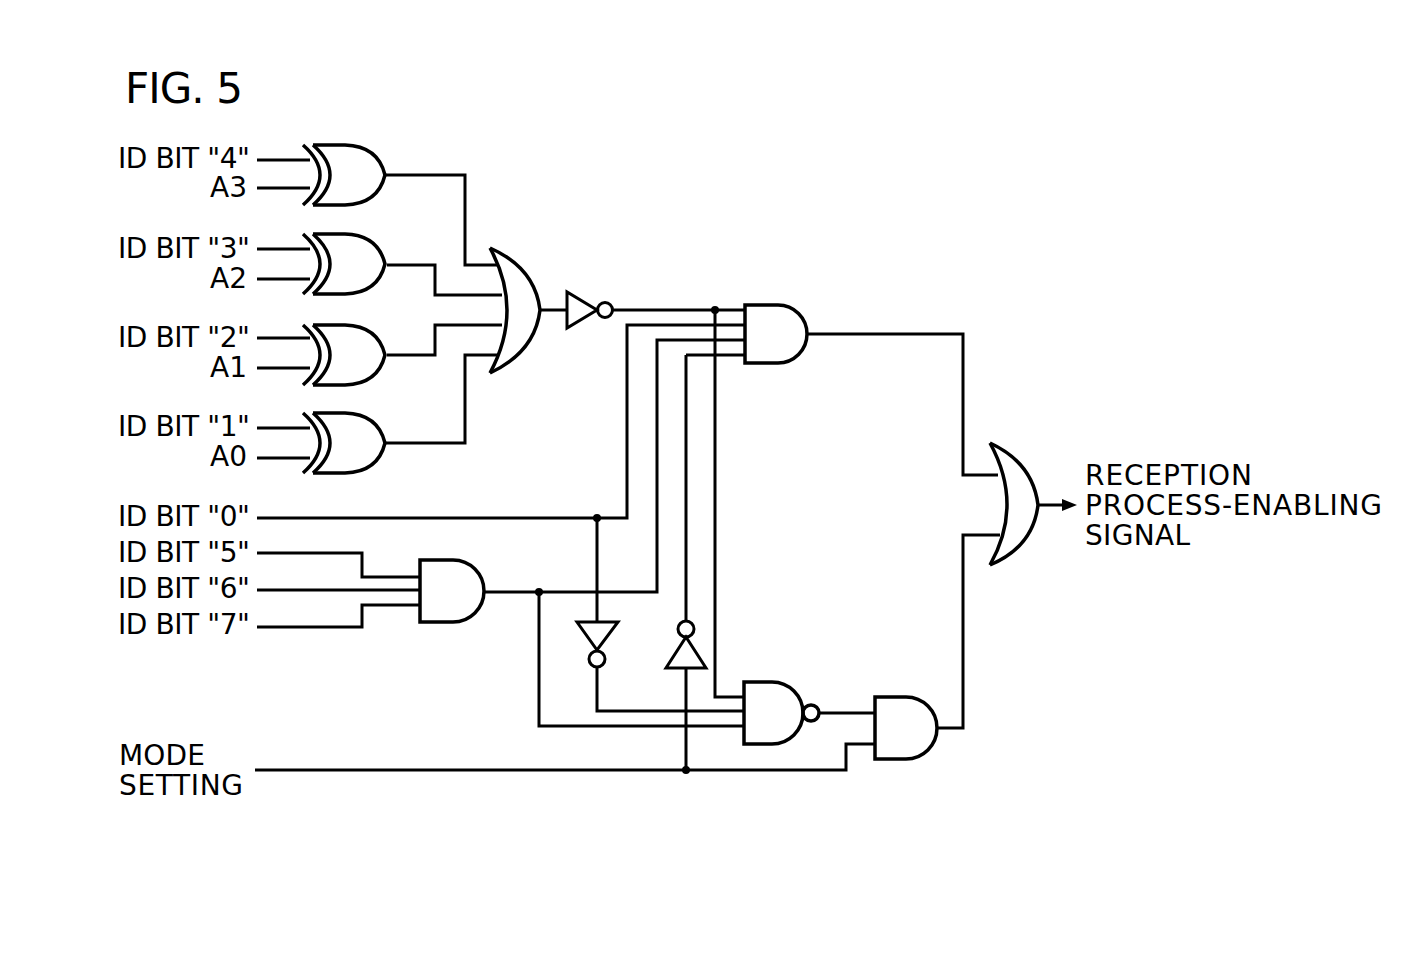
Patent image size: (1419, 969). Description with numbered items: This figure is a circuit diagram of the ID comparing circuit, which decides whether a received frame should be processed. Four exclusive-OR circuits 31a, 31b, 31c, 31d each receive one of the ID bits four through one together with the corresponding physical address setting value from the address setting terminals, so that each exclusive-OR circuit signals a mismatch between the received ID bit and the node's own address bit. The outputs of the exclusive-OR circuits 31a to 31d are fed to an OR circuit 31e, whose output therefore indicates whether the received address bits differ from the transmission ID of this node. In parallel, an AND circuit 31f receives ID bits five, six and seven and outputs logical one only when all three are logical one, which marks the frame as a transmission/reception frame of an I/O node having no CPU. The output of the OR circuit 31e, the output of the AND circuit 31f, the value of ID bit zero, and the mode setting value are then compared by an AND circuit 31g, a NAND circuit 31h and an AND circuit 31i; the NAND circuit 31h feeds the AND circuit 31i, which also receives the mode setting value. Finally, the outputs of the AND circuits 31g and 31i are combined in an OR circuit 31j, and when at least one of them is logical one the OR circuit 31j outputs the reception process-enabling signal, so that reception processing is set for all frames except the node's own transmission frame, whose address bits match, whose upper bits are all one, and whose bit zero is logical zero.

The exclusive-OR circuit 31a is at (380, 164).
The exclusive-OR circuit 31b is at (380, 254).
The exclusive-OR circuit 31c is at (381, 373).
The exclusive-OR circuit 31d is at (381, 453).
The OR circuit 31e is at (527, 270).
The AND circuit 31f is at (472, 626).
The AND circuit 31g is at (796, 304).
The NOT-AND (NAND) circuit 31h is at (792, 683).
The AND circuit 31i is at (929, 761).
The OR circuit 31j is at (1026, 471).